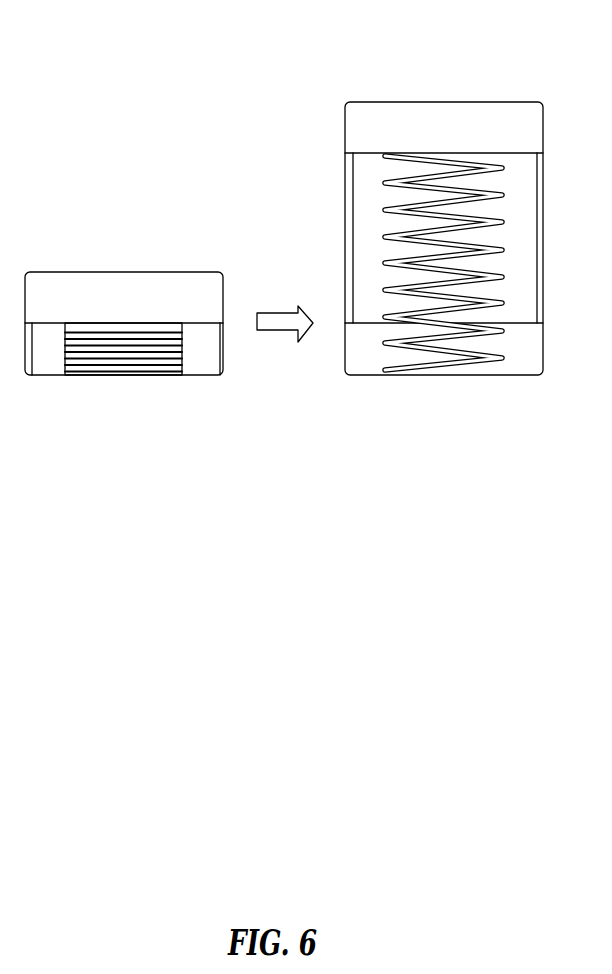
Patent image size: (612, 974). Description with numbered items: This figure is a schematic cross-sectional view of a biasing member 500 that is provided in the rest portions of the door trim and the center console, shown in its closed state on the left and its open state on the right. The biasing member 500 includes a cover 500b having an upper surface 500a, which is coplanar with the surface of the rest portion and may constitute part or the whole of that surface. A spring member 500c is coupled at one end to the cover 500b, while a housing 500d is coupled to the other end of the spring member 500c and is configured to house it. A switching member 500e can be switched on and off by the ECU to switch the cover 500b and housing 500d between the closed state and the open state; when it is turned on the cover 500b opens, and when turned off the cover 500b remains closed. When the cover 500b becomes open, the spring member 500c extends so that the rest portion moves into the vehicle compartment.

The biasing member 500 is at (308, 215).
The upper surface 500a is at (126, 272).
The cover 500b is at (210, 293).
The spring member 500c is at (183, 350).
The housing 500d is at (210, 355).
The switching member 500e is at (35, 326).